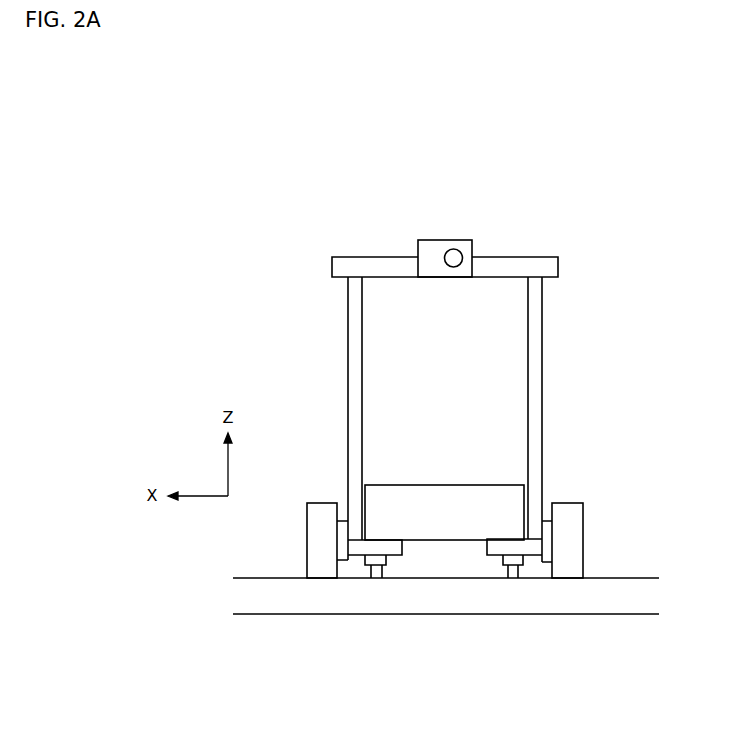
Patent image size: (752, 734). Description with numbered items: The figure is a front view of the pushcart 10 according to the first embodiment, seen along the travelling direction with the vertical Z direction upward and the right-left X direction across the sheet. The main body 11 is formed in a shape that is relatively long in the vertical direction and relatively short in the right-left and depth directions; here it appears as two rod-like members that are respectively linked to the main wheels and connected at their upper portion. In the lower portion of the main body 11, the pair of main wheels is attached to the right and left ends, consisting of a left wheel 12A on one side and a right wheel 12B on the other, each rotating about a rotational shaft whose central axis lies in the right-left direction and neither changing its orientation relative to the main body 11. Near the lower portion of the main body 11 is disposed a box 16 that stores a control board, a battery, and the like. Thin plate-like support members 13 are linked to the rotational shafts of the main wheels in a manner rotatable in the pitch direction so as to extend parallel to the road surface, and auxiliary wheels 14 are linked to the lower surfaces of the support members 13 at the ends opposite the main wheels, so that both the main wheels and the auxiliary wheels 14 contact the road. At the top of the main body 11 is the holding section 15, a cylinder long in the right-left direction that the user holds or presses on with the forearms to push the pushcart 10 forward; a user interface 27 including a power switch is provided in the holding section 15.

The pushcart 10 is at (634, 203).
The main body 11 is at (348, 440).
The left wheel 12A is at (307, 540).
The right wheel 12B is at (585, 539).
The support member 13 is at (402, 556).
The auxiliary wheel 14 is at (377, 578).
The holding section 15 is at (558, 262).
The box 16 is at (510, 502).
The user interface 27 is at (453, 249).